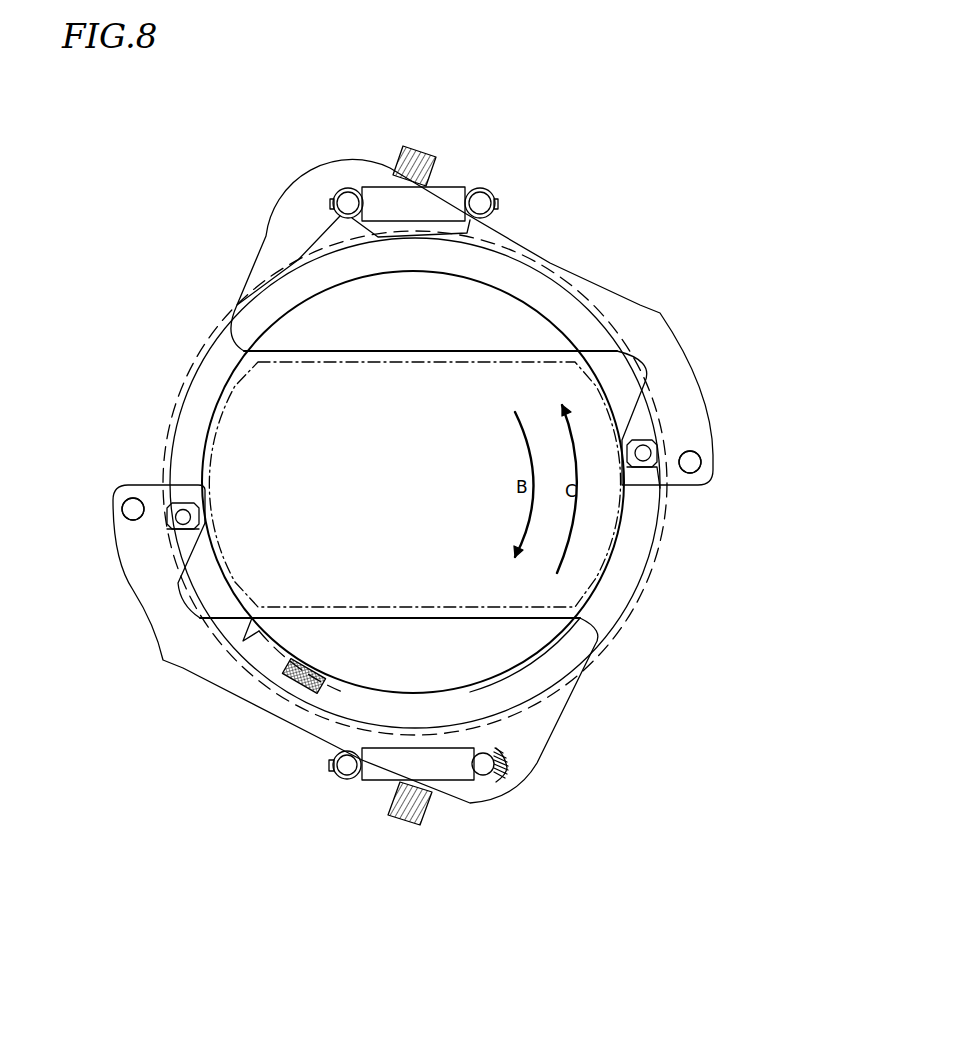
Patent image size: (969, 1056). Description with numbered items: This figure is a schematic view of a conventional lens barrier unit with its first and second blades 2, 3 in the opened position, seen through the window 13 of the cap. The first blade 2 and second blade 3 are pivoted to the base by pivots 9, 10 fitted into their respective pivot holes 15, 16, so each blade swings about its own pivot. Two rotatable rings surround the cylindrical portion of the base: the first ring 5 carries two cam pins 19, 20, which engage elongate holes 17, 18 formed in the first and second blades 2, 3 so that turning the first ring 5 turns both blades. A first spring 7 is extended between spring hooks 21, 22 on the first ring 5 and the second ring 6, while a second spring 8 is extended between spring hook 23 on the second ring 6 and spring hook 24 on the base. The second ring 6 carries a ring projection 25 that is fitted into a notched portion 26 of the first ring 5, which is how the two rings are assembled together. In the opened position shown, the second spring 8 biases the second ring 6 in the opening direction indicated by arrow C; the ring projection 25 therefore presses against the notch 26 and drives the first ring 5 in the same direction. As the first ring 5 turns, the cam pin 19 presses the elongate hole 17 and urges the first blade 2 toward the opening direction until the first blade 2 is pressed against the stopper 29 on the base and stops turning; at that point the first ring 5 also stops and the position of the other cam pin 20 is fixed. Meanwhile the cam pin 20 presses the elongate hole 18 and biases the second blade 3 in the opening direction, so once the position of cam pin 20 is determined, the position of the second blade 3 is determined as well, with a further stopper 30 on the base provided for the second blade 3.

The first blade 2 is at (640, 305).
The second blade 3 is at (152, 605).
The first ring 5 is at (198, 382).
The second ring 6 is at (172, 398).
The first spring 7 is at (384, 188).
The second spring 8 is at (462, 780).
The pivot 9 is at (701, 462).
The pivot hole 15 is at (690, 462).
The pivot 10 is at (122, 510).
The pivot hole 16 is at (133, 509).
The window 13 is at (598, 555).
The elongate hole 17 is at (648, 488).
The elongate hole 18 is at (188, 525).
The cam pin 19 is at (651, 446).
The cam pin 20 is at (181, 508).
The spring hook 21 is at (340, 194).
The spring hook 22 is at (493, 196).
The spring hook 23 is at (340, 776).
The spring hook 24 is at (500, 775).
The ring projection 25 is at (297, 680).
The notched portion 26 is at (247, 652).
The stopper 29 is at (407, 146).
The stopper 30 is at (412, 825).